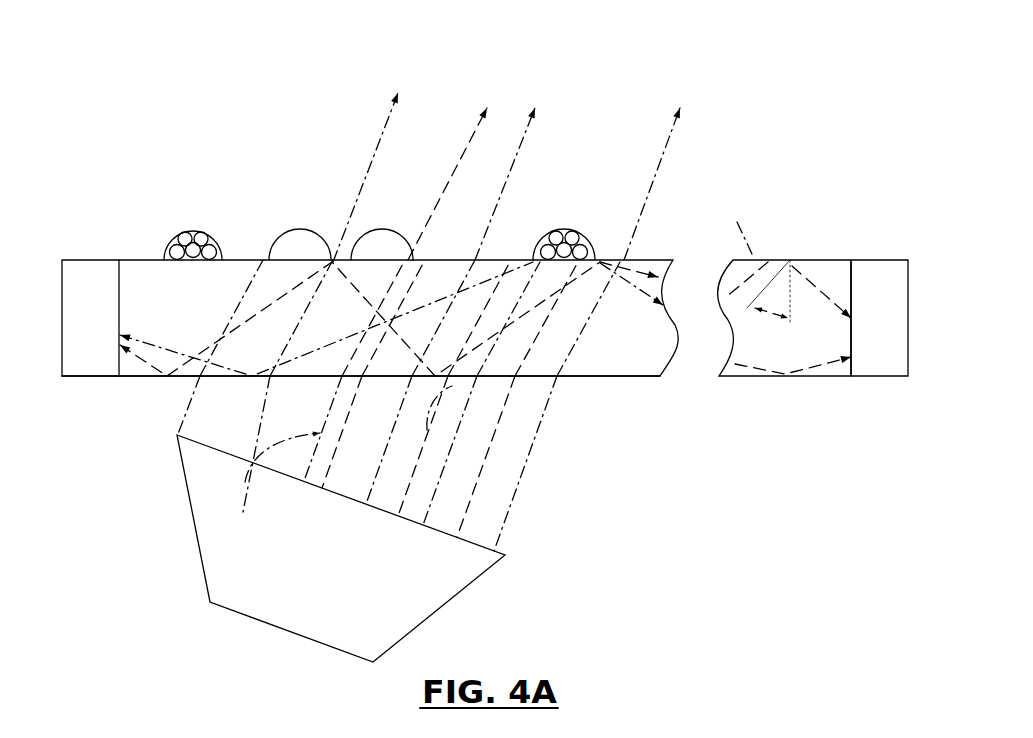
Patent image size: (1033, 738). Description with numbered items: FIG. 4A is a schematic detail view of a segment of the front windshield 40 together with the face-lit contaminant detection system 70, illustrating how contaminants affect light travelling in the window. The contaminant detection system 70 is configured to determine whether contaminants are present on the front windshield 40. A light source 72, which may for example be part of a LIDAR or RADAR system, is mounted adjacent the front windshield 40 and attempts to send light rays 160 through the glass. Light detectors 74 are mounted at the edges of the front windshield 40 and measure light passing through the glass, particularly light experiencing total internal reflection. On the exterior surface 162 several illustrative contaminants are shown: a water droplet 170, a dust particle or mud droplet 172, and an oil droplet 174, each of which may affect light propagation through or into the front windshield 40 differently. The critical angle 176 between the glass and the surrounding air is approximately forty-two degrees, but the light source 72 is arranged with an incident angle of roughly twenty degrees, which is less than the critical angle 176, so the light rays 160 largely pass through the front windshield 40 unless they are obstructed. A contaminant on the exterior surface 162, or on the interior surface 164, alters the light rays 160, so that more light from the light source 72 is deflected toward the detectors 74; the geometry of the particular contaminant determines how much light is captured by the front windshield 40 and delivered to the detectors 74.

The contaminant detection system 70 is at (140, 68).
The front windshield 40 is at (625, 365).
The light source 72 is at (314, 569).
The light detector 74 is at (90, 273).
The light rays 160 is at (253, 293).
The exterior surface 162 is at (815, 260).
The interior surface 164 is at (183, 377).
The water droplet 170 is at (288, 233).
The dust particle or mud droplet 172 is at (186, 232).
The oil droplet 174 is at (390, 232).
The critical angle 176 is at (772, 310).